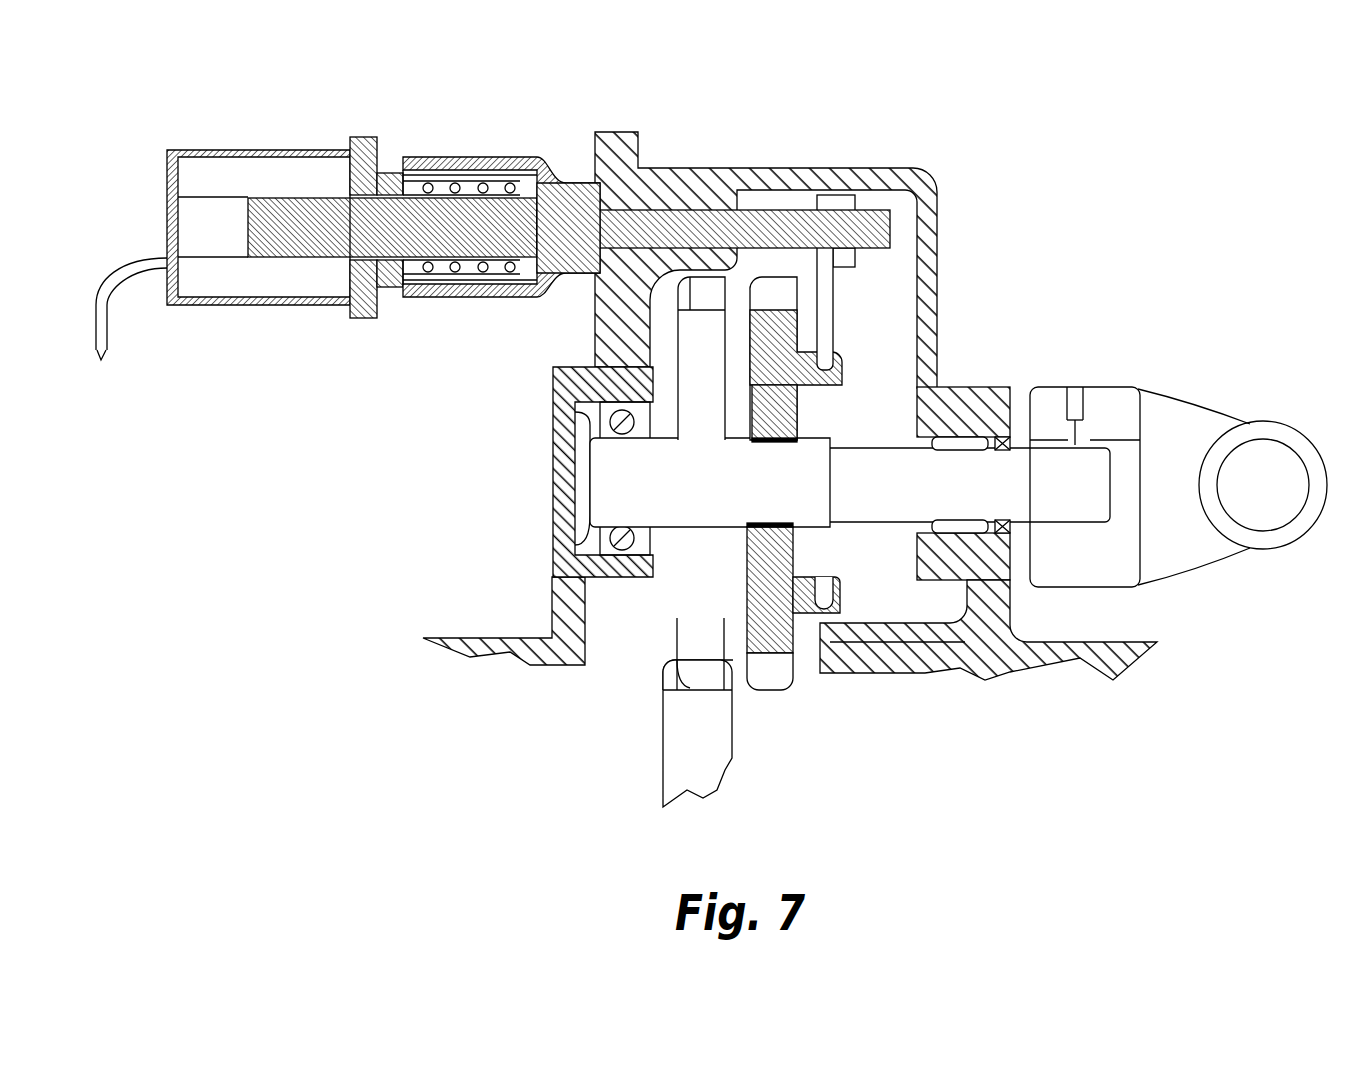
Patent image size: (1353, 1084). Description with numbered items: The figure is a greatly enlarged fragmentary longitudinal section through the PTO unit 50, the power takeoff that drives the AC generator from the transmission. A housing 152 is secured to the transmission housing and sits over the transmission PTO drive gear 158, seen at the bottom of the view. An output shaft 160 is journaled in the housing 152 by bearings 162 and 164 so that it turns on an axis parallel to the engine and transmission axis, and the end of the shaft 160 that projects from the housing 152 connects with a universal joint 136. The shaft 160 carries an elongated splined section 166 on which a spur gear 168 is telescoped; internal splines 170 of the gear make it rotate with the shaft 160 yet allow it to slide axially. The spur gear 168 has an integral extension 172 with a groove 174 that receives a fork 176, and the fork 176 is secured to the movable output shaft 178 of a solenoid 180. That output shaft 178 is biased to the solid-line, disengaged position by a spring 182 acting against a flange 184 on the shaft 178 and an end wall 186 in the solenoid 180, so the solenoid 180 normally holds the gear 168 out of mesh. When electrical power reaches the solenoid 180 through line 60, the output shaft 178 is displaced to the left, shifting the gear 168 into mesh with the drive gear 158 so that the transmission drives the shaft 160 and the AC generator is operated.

The PTO unit 50 is at (955, 263).
The line 60 is at (101, 296).
The universal joint 136 is at (1247, 400).
The housing 152 is at (938, 320).
The transmission PTO drive gear 158 is at (738, 762).
The output shaft 160 is at (1003, 467).
The bearing 162 is at (575, 540).
The bearing 164 is at (1005, 600).
The splined section 166 is at (700, 440).
The spur gear 168 is at (805, 387).
The internal splines 170 is at (735, 535).
The integral extension 172 is at (808, 612).
The groove 174 is at (858, 648).
The fork 176 is at (840, 335).
The output shaft 178 is at (765, 215).
The solenoid 180 is at (207, 143).
The spring 182 is at (447, 182).
The flange 184 is at (522, 268).
The end wall 186 is at (353, 283).